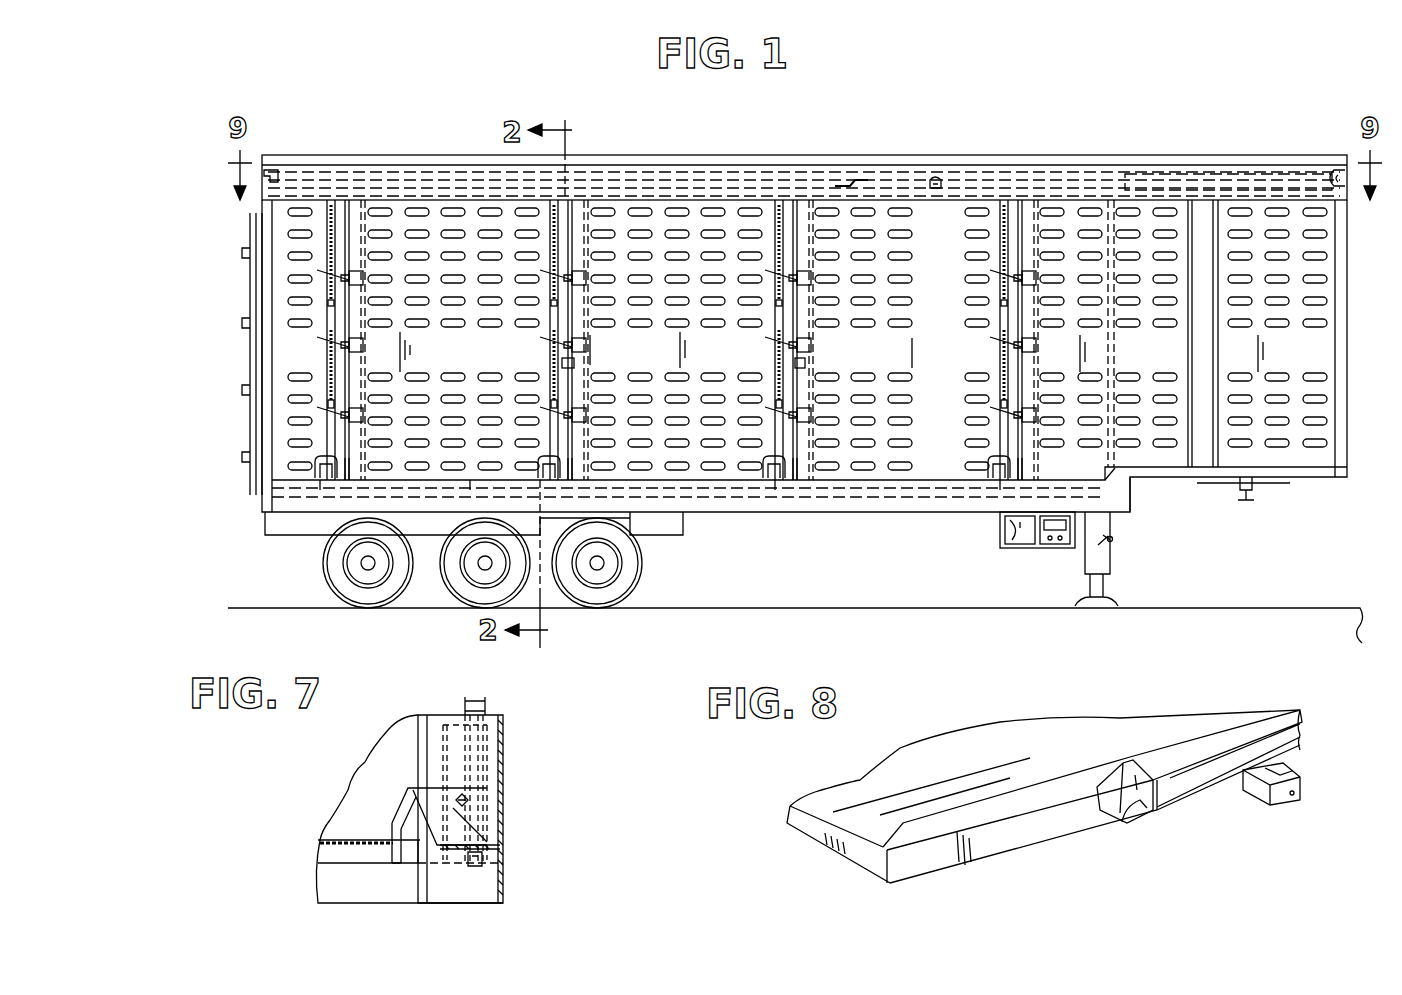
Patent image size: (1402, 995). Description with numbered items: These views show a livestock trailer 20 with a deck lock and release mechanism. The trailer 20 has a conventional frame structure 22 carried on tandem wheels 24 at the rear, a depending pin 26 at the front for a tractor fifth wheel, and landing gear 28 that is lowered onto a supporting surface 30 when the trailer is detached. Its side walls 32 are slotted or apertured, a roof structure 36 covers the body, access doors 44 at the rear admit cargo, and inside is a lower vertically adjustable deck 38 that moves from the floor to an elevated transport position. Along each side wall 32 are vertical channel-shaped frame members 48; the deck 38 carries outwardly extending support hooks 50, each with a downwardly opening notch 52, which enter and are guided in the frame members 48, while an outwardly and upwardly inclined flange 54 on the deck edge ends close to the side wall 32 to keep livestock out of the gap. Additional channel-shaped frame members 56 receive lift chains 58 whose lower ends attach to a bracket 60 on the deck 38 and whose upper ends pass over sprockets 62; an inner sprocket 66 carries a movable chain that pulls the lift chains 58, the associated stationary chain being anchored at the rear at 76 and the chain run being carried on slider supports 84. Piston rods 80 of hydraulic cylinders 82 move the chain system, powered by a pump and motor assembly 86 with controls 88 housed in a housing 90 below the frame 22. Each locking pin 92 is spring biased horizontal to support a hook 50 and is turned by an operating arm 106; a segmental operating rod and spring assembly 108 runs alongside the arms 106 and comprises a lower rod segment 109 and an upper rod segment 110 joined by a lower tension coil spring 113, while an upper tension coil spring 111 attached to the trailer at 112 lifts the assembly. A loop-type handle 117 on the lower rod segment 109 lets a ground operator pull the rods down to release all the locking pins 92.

In FIG. 1, the livestock trailer 20 is at (845, 514).
In FIG. 1, the frame structure 22 is at (876, 512).
In FIG. 1, the tandem wheels 24 is at (455, 580).
In FIG. 1, the depending pin 26 is at (1262, 495).
In FIG. 1, the landing gear 28 is at (1112, 567).
In FIG. 1, the supporting surface 30 is at (850, 607).
In FIG. 1, the side walls 32 is at (1140, 470).
In FIG. 1, the roof structure 36 is at (1115, 152).
In FIG. 7, the lower vertically adjustable deck 38 is at (320, 838).
In FIG. 8, the lower vertically adjustable deck 38 is at (940, 760).
In FIG. 1, the access doors 44 is at (250, 420).
In FIG. 1, the vertical frame members 48 is at (588, 215).
In FIG. 7, the vertical frame members 48 is at (505, 745).
In FIG. 7, the support hooks 50 is at (420, 822).
In FIG. 8, the support hooks 50 is at (1120, 795).
In FIG. 7, the downwardly opening notch 52 is at (453, 812).
In FIG. 8, the downwardly opening notch 52 is at (1148, 812).
In FIG. 7, the inclined flange 54 is at (392, 785).
In FIG. 8, the inclined flange 54 is at (1047, 793).
In FIG. 1, the channel-shaped frame members 56 is at (348, 484).
In FIG. 7, the lift chain 58 is at (465, 703).
In FIG. 7, the bracket 60 is at (505, 862).
In FIG. 8, the bracket 60 is at (1265, 792).
In FIG. 1, the sprocket 62 is at (935, 190).
In FIG. 1, the inner sprocket 66 is at (365, 198).
In FIG. 1, the anchor 76 is at (275, 172).
In FIG. 1, the piston rods 80 is at (1103, 175).
In FIG. 1, the hydraulic cylinders 82 is at (1213, 175).
In FIG. 1, the slider supports 84 is at (843, 170).
In FIG. 1, the hydraulic pump and electric motor assembly 86 is at (1030, 548).
In FIG. 1, the controls 88 is at (1060, 548).
In FIG. 1, the housing 90 is at (998, 525).
In FIG. 7, the locking pin 92 is at (470, 802).
In FIG. 1, the operating arm 106 is at (318, 345).
In FIG. 1, the segmental operating rod and spring assembly 108 is at (565, 364).
In FIG. 1, the lower rod segment 109 is at (805, 365).
In FIG. 1, the upper rod segment 110 is at (777, 245).
In FIG. 1, the upper tension coil spring 111 is at (332, 210).
In FIG. 1, the spring connection point 112 is at (1003, 208).
In FIG. 1, the lower tension coil spring 113 is at (590, 308).
In FIG. 1, the loop-type handle 117 is at (770, 482).